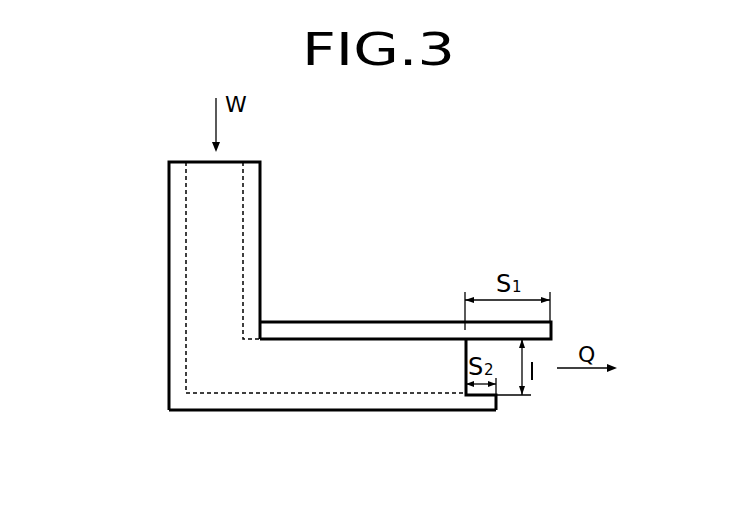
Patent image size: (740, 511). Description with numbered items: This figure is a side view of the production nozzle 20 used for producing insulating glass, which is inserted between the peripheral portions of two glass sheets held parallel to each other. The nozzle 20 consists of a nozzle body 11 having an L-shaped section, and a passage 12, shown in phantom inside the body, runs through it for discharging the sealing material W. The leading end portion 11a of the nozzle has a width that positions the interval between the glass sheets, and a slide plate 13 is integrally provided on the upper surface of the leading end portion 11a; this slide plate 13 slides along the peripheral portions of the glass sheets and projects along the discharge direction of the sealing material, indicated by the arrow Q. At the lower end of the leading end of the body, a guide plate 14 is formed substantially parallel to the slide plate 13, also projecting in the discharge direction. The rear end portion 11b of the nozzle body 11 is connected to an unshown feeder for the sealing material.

The nozzle body 11 is at (295, 317).
The leading end portion 11a is at (432, 360).
The rear end portion 11b is at (169, 183).
The passage 12 is at (197, 162).
The slide plate 13 is at (367, 331).
The guide plate 14 is at (473, 405).
The nozzle for producing insulating glass 20 is at (296, 293).